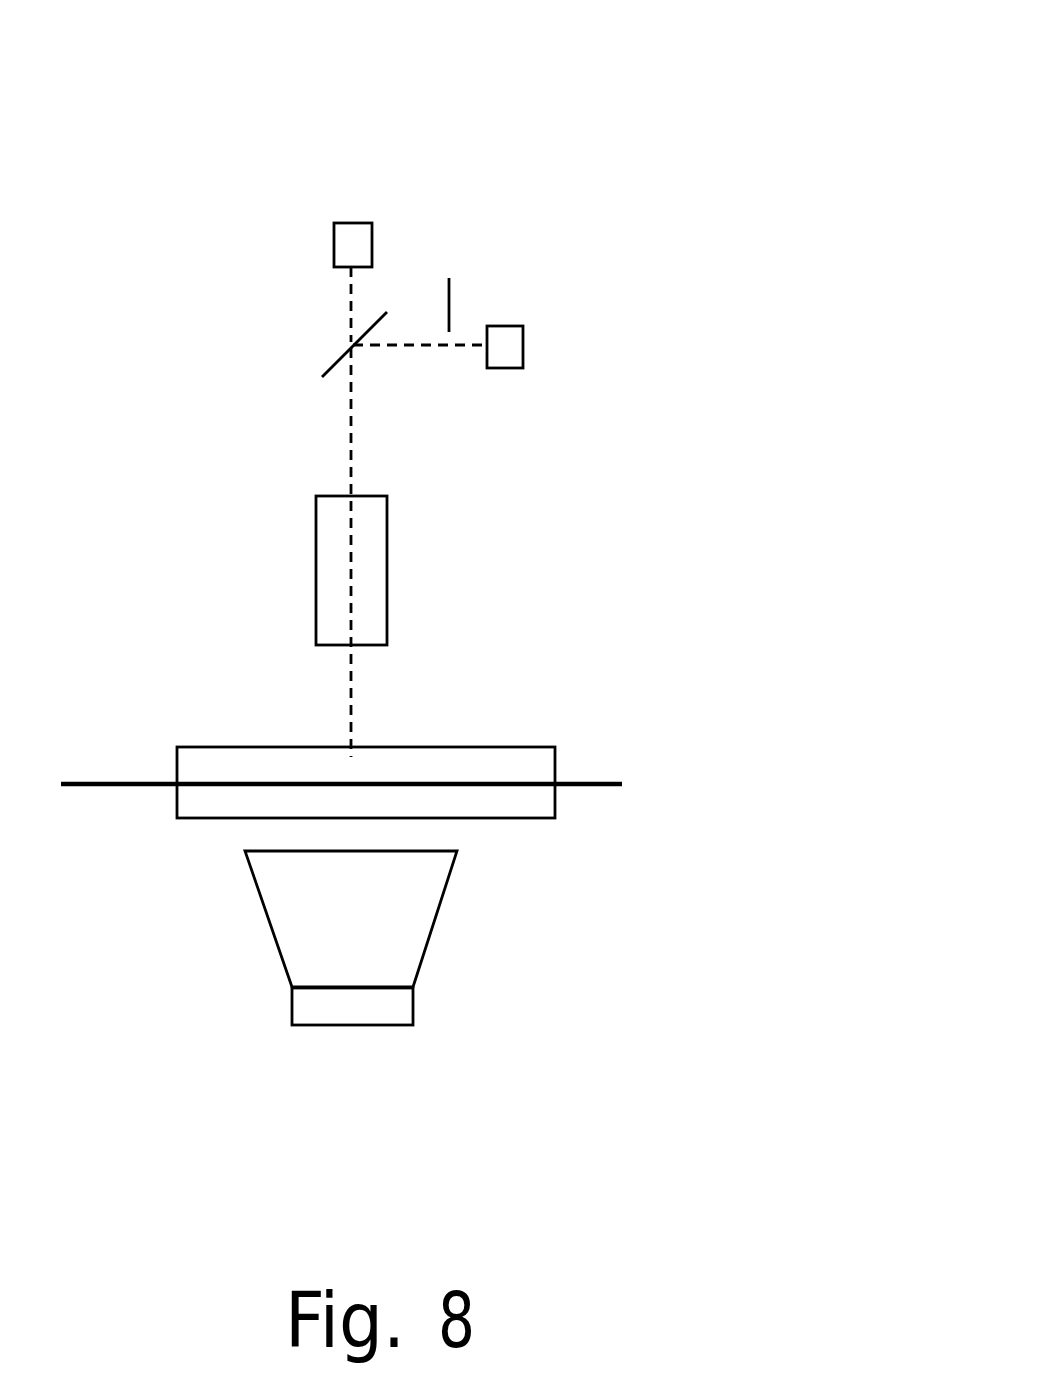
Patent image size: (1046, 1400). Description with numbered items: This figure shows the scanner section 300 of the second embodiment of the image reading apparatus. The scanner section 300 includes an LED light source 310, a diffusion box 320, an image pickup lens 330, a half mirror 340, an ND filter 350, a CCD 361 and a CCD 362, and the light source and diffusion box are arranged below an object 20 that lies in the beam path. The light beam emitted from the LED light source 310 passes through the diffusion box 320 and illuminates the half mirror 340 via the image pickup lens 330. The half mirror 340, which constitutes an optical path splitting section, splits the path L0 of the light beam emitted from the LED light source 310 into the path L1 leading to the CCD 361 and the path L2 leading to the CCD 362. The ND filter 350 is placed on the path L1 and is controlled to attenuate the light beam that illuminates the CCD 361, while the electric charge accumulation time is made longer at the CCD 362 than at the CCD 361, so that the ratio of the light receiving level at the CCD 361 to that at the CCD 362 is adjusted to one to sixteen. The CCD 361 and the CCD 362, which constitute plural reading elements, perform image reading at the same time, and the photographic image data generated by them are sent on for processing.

The scanner section 300 is at (746, 132).
The LED light source 310 is at (413, 1007).
The diffusion box 320 is at (438, 918).
The image pickup lens 330 is at (387, 535).
The half mirror 340 is at (335, 360).
The ND filter 350 is at (449, 300).
The CCD 361 is at (523, 345).
The CCD 362 is at (335, 240).
The substrate 20 is at (122, 782).
The path of the light beam L0 is at (346, 428).
The path leading to the CCD 361 L1 is at (402, 350).
The path leading to the CCD 362 L2 is at (346, 292).